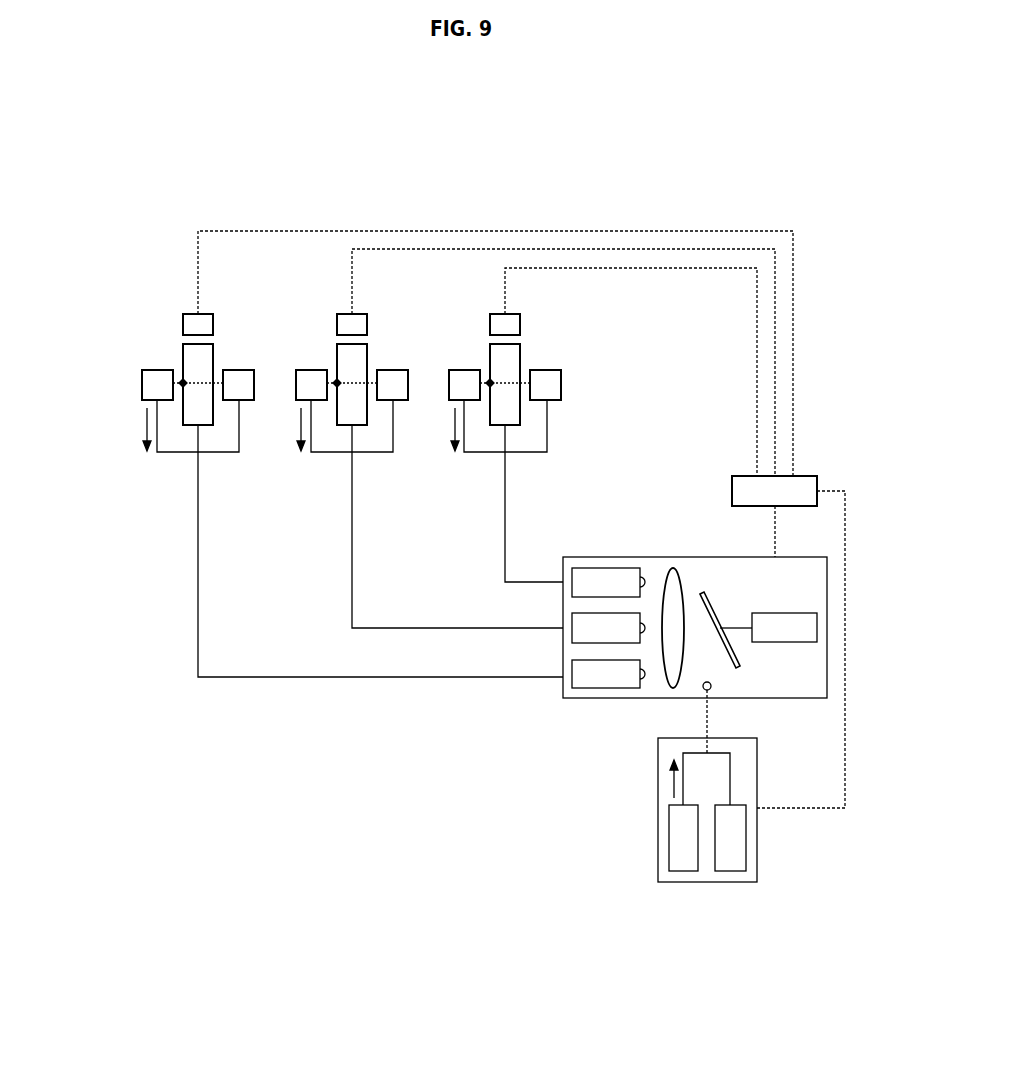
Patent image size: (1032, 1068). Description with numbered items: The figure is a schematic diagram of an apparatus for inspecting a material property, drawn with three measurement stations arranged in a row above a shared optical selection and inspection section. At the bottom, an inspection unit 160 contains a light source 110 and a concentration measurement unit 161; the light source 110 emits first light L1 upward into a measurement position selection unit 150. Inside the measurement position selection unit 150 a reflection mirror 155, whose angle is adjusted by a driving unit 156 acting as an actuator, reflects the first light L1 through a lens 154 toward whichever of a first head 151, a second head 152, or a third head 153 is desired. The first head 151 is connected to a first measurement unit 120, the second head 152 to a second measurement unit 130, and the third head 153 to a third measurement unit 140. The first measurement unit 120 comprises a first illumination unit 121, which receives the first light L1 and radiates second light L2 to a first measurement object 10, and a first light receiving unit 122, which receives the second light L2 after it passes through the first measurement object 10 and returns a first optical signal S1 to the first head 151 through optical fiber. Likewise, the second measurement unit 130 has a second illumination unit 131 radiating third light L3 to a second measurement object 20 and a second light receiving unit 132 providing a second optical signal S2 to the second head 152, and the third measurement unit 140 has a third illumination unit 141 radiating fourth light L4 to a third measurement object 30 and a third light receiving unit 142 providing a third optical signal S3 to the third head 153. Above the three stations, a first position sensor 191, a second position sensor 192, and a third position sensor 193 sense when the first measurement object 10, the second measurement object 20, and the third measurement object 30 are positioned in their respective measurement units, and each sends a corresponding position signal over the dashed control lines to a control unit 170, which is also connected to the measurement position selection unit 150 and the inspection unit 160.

The first measurement object 10 is at (191, 428).
The second measurement object 20 is at (345, 428).
The third measurement object 30 is at (498, 428).
The light source 110 is at (683, 871).
The first measurement unit 120 is at (147, 373).
The first illumination unit 121 is at (224, 370).
The first light receiving unit 122 is at (142, 384).
The second measurement unit 130 is at (375, 338).
The second illumination unit 131 is at (408, 370).
The second light receiving unit 132 is at (327, 370).
The third measurement unit 140 is at (556, 372).
The third illumination unit 141 is at (561, 385).
The third light receiving unit 142 is at (480, 370).
The measurement position selection unit 150 is at (827, 559).
The first head 151 is at (572, 662).
The second head 152 is at (572, 615).
The third head 153 is at (572, 570).
The lens 154 is at (673, 568).
The reflection mirror 155 is at (738, 667).
The driving unit 156 is at (817, 614).
The inspection unit 160 is at (757, 739).
The concentration measurement unit 161 is at (730, 871).
The control unit 170 is at (817, 478).
The first position sensor 191 is at (183, 316).
The second position sensor 192 is at (337, 316).
The third position sensor 193 is at (520, 316).
The first optical signal S1 is at (145, 432).
The second optical signal S2 is at (299, 432).
The third optical signal S3 is at (453, 432).
The first light L1 is at (672, 779).
The second light L2 is at (203, 387).
The third light L3 is at (357, 387).
The fourth light L4 is at (510, 387).